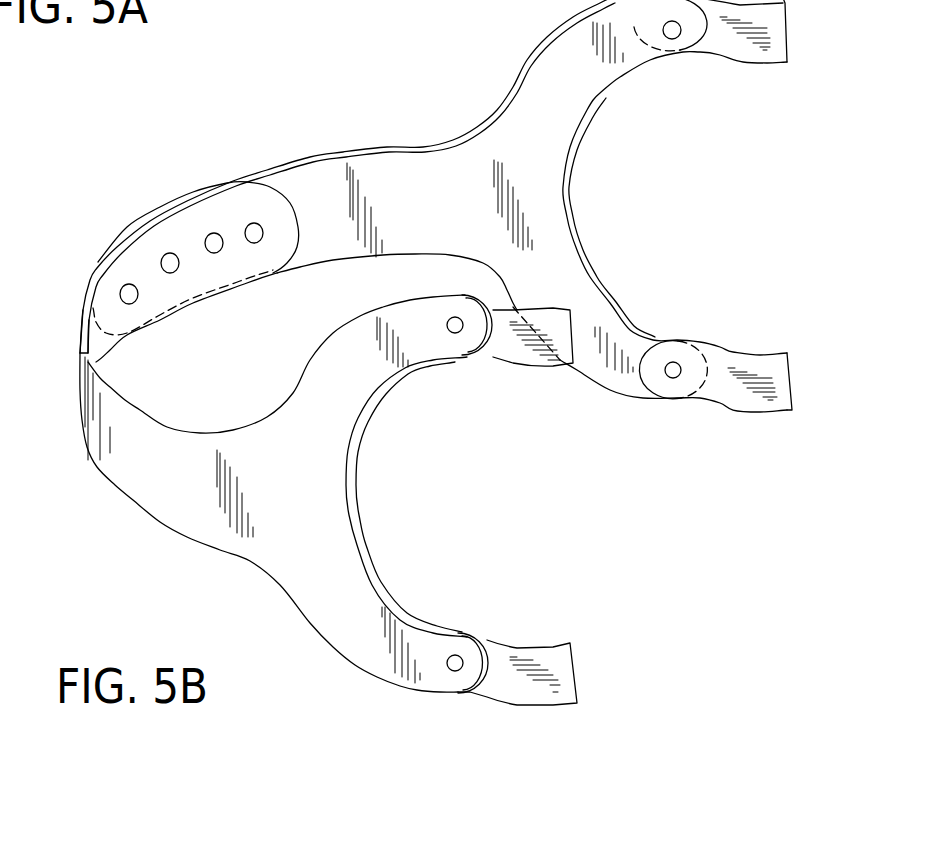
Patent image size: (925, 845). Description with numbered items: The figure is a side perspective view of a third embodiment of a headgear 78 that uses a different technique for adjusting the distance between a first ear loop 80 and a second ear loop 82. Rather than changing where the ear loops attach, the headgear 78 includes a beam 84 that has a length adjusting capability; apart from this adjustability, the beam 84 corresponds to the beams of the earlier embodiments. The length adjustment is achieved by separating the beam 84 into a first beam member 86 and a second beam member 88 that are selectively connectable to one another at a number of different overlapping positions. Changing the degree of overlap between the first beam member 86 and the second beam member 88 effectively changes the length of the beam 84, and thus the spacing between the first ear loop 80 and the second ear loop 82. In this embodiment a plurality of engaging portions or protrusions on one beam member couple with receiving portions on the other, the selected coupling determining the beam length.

The headgear 78 is at (694, 570).
The first ear loop 80 is at (293, 533).
The second ear loop 82 is at (550, 87).
The beam 84 is at (210, 158).
The first beam member 86 is at (80, 352).
The second beam member 88 is at (307, 177).